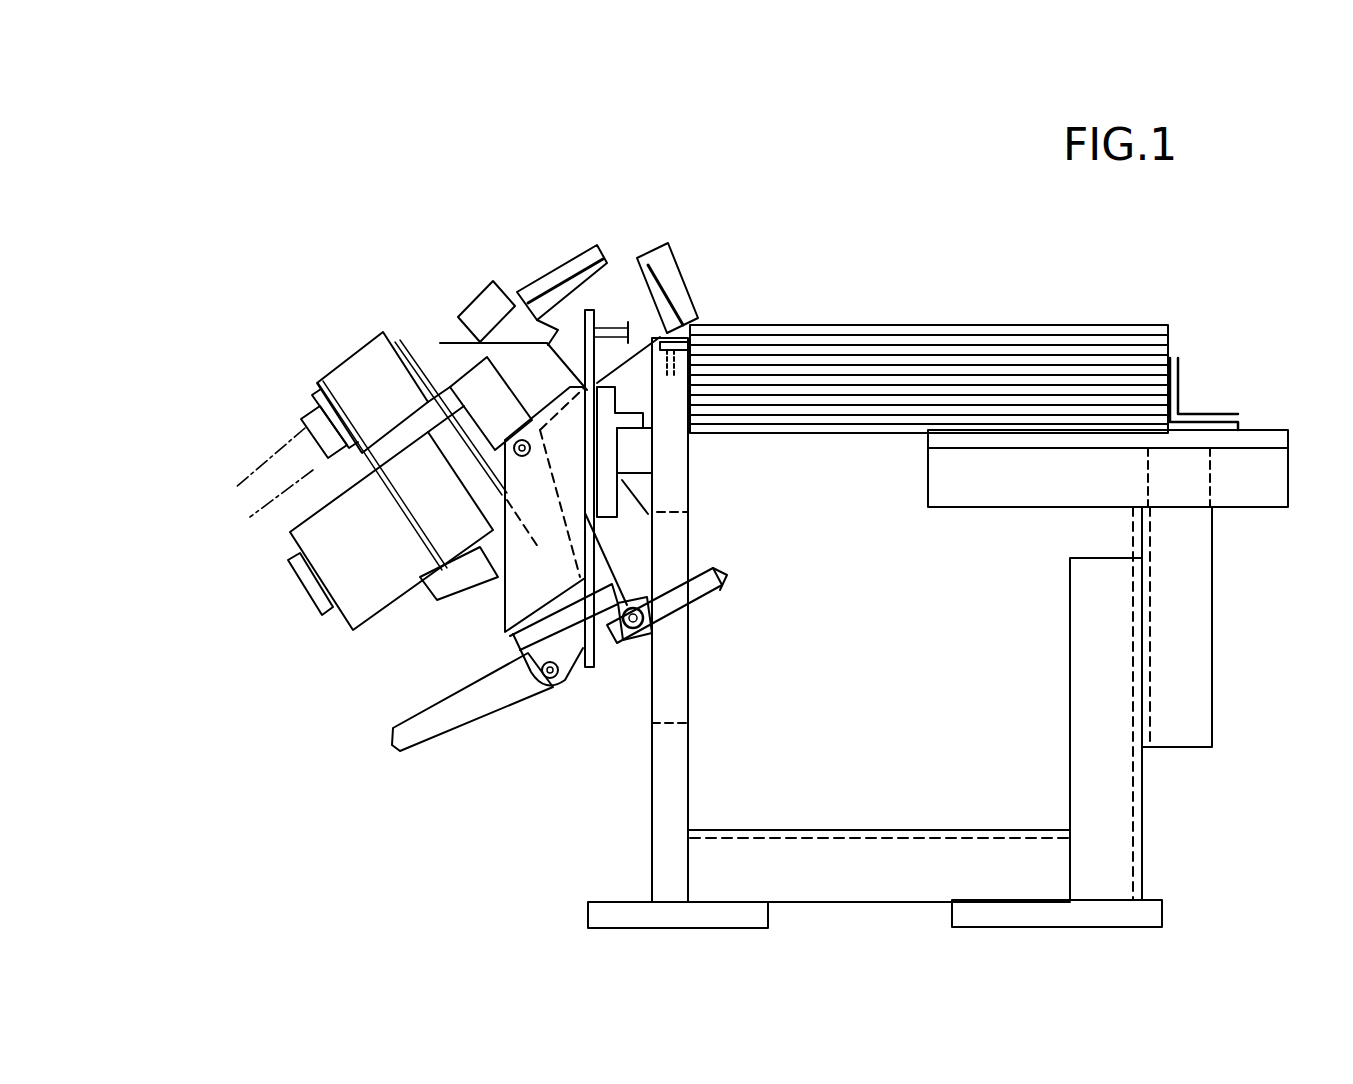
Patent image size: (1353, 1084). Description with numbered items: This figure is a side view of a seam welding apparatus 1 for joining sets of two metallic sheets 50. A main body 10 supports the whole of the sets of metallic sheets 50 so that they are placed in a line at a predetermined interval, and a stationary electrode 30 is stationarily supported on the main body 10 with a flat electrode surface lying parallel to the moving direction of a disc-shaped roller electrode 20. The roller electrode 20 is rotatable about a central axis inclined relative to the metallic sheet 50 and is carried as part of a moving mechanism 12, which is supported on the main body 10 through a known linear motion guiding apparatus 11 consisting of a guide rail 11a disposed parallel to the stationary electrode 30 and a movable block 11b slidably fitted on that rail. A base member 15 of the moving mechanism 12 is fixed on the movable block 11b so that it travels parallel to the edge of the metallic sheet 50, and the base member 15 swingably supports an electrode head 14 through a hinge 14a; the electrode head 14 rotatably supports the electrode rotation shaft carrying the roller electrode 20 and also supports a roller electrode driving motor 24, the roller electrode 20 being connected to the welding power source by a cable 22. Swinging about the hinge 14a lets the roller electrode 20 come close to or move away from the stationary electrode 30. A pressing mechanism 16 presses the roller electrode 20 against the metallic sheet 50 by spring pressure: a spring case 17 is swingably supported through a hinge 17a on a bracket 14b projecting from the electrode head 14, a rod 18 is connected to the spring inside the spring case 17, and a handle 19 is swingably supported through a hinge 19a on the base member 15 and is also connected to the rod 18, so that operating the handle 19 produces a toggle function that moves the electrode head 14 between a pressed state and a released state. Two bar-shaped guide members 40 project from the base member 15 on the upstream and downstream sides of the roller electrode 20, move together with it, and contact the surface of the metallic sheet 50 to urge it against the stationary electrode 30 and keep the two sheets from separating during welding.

The seam welding apparatus 1 is at (361, 170).
The main body 10 is at (1203, 417).
The linear motion guiding apparatus 11 is at (837, 487).
The guide rail 11a is at (640, 458).
The movable block 11b is at (648, 500).
The moving mechanism 12 is at (250, 745).
The electrode head 14 is at (517, 345).
The hinge 14a is at (523, 417).
The bracket 14b is at (668, 560).
The base member 15 is at (507, 632).
The pressing mechanism 16 is at (444, 769).
The spring case 17 is at (644, 640).
The hinge 17a is at (630, 640).
The rod 18 is at (588, 648).
The handle 19 is at (392, 742).
The hinge 19a is at (527, 682).
The roller electrode 20 is at (653, 245).
The cable 22 is at (478, 292).
The roller electrode driving motor 24 is at (320, 580).
The stationary electrode 30 is at (690, 335).
The guide member 40 is at (607, 327).
The metallic sheet 50 is at (1010, 330).